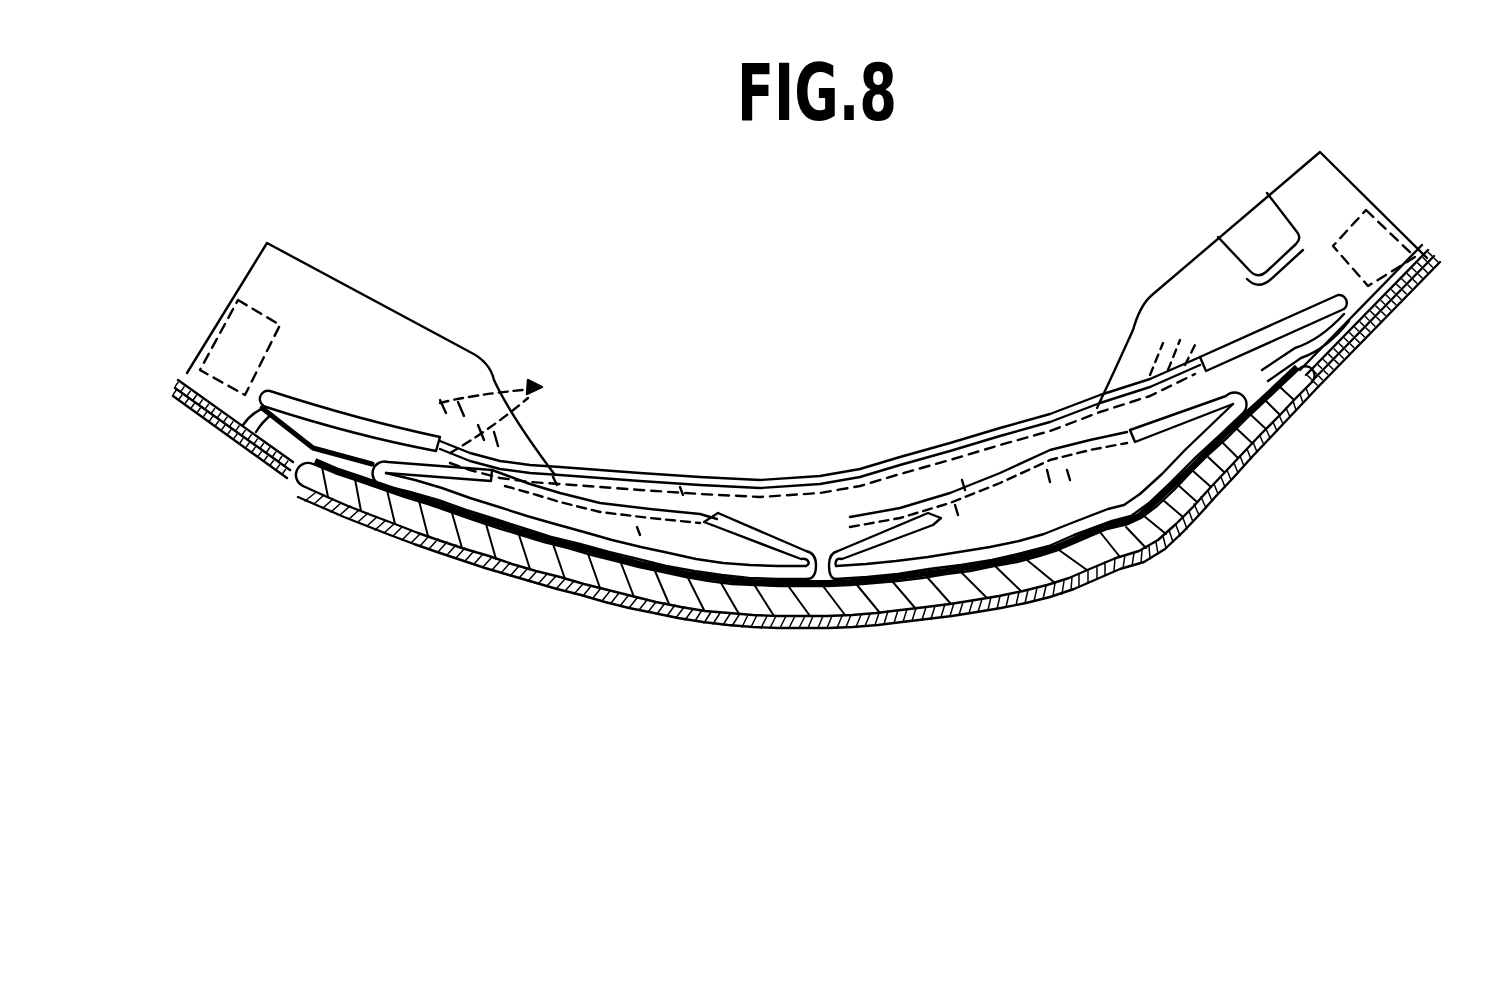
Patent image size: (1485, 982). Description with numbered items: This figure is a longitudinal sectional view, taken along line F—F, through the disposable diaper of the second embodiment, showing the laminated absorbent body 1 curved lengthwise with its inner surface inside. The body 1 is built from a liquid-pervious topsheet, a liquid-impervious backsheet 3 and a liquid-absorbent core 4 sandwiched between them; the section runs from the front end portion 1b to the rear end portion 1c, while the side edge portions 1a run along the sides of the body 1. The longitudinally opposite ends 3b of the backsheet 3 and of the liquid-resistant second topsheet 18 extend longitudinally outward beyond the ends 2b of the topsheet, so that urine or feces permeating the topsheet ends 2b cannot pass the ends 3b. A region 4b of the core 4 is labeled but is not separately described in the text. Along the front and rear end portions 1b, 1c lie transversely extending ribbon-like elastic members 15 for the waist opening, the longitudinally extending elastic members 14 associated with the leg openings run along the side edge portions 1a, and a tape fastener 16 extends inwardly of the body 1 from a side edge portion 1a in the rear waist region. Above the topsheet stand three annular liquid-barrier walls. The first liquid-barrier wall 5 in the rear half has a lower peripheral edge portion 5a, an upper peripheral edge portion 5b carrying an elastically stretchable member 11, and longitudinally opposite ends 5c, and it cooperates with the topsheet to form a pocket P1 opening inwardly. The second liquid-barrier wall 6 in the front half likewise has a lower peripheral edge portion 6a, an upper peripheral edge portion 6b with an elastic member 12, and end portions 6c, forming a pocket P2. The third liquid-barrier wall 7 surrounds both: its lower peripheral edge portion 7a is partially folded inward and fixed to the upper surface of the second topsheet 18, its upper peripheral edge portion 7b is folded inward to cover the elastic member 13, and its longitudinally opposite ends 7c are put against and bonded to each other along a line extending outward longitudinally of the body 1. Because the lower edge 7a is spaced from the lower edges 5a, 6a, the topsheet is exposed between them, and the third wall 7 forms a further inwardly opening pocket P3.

The body 1 is at (1318, 97).
The side edge portion 1a is at (373, 310).
The front end portion 1b is at (260, 272).
The rear end portion 1c is at (1350, 193).
The longitudinally opposite end of the topsheet 2b is at (283, 460).
The backsheet 3 is at (640, 613).
The longitudinally opposite end of the backsheet 3b is at (223, 427).
The liquid-absorbent core 4 is at (572, 583).
The cushion layer end 4b is at (310, 493).
The first liquid-barrier wall 5 is at (1007, 503).
The lower peripheral edge portion 5a is at (1077, 523).
The upper peripheral edge portion 5b is at (1140, 467).
The longitudinally opposite end 5c is at (870, 540).
The second liquid-barrier wall 6 is at (585, 513).
The lower peripheral edge portion 6a is at (680, 543).
The upper peripheral edge portion 6b is at (718, 524).
The longitudinally opposite end portion 6c is at (417, 460).
The third liquid-barrier wall 7 is at (840, 497).
The lower peripheral edge portion 7a is at (820, 573).
The upper peripheral edge portion 7b is at (733, 487).
The longitudinally opposite end 7c is at (353, 420).
The elastically stretchable member 11 is at (955, 507).
The elastic member 12 is at (555, 477).
The elastic member 13 is at (680, 487).
The elastic member 14 is at (505, 405).
The ribbon-like elastic member 15 is at (193, 410).
The tape fastener 16 is at (1247, 227).
The second topsheet 18 is at (248, 425).
The pocket P1 is at (1067, 470).
The pocket P2 is at (637, 527).
The pocket P3 is at (962, 480).